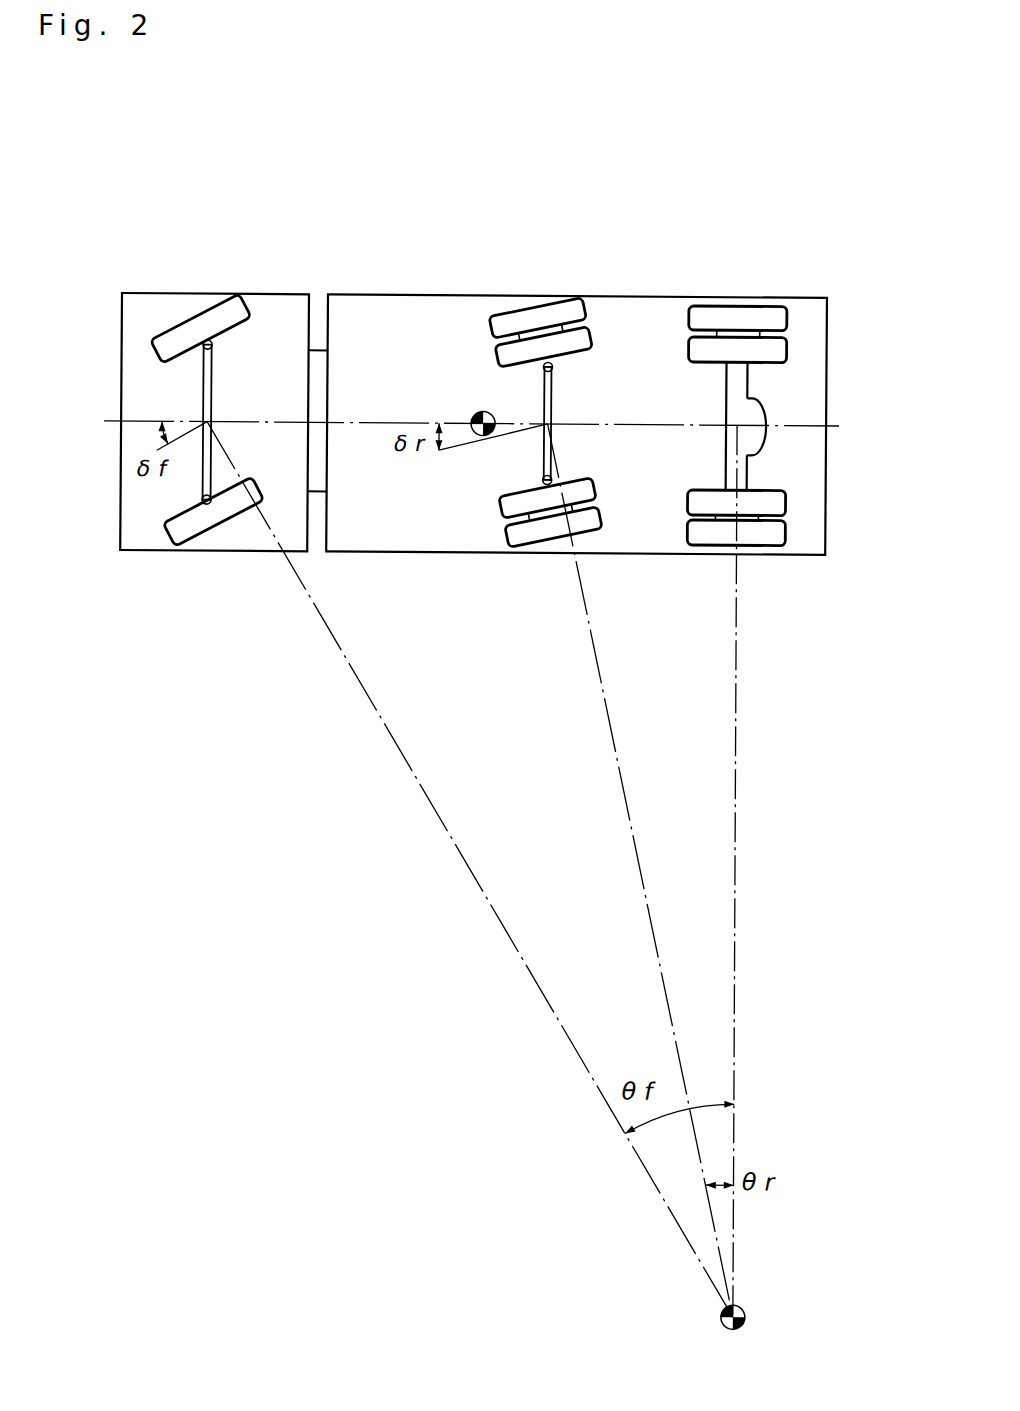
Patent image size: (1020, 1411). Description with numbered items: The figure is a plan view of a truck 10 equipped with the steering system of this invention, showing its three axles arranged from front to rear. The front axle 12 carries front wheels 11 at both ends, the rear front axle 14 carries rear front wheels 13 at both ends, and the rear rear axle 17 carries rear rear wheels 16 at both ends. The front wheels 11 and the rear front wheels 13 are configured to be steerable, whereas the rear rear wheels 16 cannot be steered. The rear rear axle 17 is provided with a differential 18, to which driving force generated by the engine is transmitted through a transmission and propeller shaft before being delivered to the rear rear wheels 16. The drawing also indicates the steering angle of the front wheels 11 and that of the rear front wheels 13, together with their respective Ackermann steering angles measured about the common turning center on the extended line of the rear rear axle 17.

The truck 10 is at (147, 199).
The front wheels 11 is at (182, 318).
The front axle 12 is at (213, 379).
The rear front wheels 13 is at (497, 359).
The rear front axle 14 is at (553, 397).
The rear rear wheels 16 is at (689, 348).
The rear rear axle 17 is at (727, 378).
The differential 18 is at (762, 401).